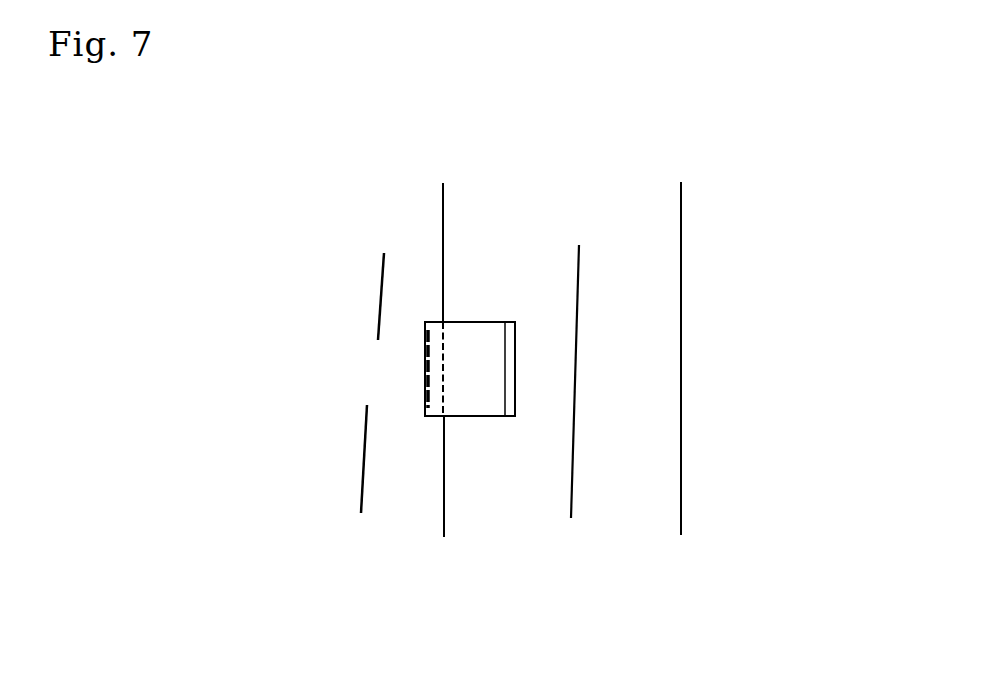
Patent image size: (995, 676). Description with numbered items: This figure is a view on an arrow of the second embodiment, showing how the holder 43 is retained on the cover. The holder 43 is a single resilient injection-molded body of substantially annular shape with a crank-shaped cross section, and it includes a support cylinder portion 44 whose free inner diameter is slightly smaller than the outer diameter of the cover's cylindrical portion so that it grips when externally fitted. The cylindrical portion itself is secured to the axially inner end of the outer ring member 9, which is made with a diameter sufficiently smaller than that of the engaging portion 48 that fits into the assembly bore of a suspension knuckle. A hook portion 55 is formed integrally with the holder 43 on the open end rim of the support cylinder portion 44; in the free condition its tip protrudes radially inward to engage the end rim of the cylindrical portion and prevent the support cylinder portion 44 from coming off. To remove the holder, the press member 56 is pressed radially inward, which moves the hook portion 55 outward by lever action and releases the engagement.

The outer ring member 9 is at (442, 238).
The holder 43 is at (652, 310).
The support cylinder portion 44 is at (662, 383).
The engaging portion 48 is at (429, 465).
The hook portion 55 is at (424, 382).
The press member 56 is at (488, 410).